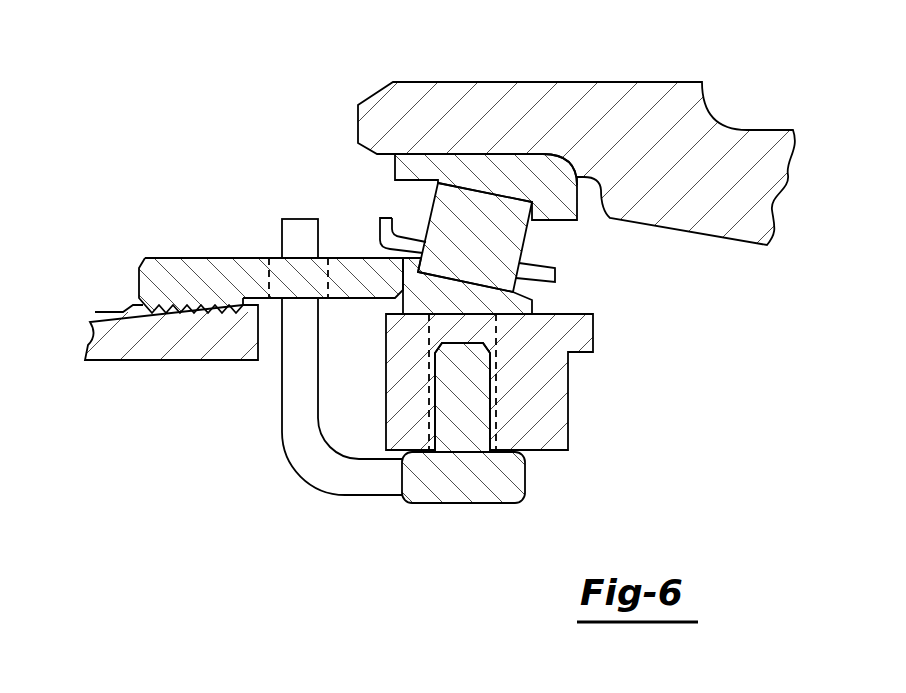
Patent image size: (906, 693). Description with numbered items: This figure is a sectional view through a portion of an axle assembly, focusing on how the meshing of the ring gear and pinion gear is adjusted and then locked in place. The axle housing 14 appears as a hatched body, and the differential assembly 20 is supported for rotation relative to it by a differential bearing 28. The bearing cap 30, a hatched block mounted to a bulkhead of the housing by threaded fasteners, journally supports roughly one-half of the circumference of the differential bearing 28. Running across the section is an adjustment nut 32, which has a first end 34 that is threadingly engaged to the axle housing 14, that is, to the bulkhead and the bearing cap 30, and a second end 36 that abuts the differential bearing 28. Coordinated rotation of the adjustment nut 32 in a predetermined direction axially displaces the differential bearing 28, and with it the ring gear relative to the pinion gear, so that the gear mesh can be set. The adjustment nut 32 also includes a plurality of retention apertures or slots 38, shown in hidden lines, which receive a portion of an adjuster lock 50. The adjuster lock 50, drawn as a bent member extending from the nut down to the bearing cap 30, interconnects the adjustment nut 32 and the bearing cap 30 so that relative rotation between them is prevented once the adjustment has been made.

The axle housing 14 is at (115, 362).
The differential assembly 20 is at (449, 88).
The differential bearing 28 is at (390, 201).
The bearing cap 30 is at (560, 387).
The adjustment nut 32 is at (166, 262).
The first end 34 is at (232, 275).
The second end 36 is at (348, 268).
The retention apertures or slots 38 is at (330, 277).
The adjuster lock 50 is at (325, 524).